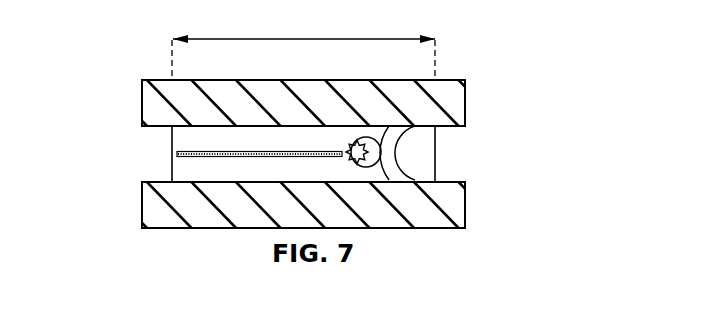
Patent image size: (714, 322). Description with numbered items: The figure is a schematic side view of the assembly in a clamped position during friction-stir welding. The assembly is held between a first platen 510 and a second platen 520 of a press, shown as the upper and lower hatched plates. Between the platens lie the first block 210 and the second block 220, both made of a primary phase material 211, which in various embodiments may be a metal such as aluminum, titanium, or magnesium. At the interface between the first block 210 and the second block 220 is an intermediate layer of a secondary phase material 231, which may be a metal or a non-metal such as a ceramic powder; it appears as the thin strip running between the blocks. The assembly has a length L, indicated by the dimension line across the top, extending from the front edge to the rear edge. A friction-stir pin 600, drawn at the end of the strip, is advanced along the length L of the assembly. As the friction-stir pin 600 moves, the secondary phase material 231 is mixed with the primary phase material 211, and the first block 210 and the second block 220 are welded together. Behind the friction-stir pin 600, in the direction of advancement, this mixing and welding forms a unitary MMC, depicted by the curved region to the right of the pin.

The length L is at (306, 38).
The first platen 510 is at (465, 96).
The second platen 520 is at (465, 219).
The first block 210 is at (170, 148).
The second block 220 is at (168, 178).
The primary phase material 211 is at (207, 133).
The secondary phase material 231 is at (174, 155).
The friction-stir pin 600 is at (339, 141).
The unitary MMC is at (417, 154).